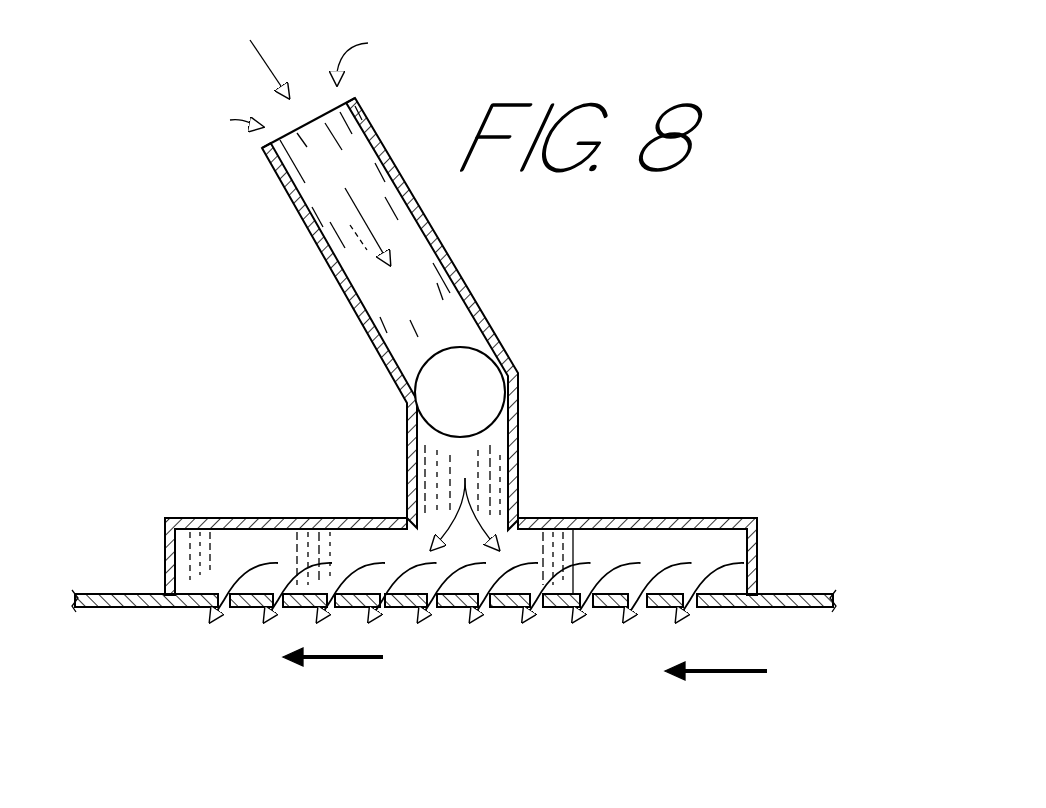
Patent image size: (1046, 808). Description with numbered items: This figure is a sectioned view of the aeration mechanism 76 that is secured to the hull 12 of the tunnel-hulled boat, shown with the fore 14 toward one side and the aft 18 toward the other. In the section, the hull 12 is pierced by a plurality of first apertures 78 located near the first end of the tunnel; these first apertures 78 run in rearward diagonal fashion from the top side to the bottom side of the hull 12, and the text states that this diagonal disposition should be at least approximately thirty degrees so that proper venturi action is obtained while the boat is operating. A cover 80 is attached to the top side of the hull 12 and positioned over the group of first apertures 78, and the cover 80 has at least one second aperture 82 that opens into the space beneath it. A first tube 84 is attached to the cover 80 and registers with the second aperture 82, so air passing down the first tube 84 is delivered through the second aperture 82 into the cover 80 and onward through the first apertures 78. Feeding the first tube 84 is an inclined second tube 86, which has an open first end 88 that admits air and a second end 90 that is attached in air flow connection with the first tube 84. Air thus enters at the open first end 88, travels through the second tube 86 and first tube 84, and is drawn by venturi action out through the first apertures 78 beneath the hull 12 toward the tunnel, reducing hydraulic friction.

The hull 12 is at (787, 597).
The fore 14 is at (727, 322).
The aft 18 is at (112, 342).
The aeration mechanism 76 is at (301, 370).
The first apertures 78 is at (226, 612).
The cover 80 is at (277, 518).
The second aperture 82 is at (500, 493).
The first tube 84 is at (520, 430).
The second tube 86 is at (333, 274).
The open first end 88 is at (317, 121).
The second end 90 is at (443, 347).